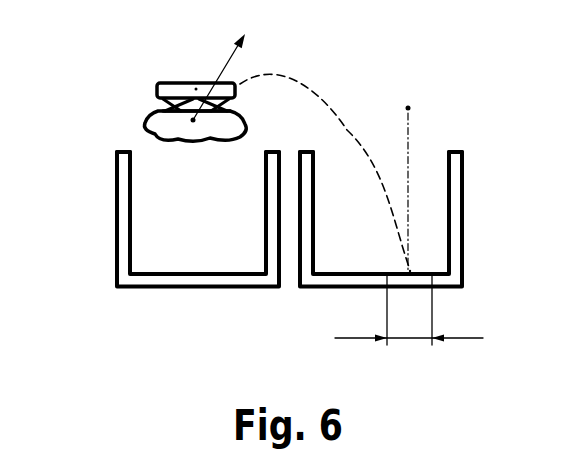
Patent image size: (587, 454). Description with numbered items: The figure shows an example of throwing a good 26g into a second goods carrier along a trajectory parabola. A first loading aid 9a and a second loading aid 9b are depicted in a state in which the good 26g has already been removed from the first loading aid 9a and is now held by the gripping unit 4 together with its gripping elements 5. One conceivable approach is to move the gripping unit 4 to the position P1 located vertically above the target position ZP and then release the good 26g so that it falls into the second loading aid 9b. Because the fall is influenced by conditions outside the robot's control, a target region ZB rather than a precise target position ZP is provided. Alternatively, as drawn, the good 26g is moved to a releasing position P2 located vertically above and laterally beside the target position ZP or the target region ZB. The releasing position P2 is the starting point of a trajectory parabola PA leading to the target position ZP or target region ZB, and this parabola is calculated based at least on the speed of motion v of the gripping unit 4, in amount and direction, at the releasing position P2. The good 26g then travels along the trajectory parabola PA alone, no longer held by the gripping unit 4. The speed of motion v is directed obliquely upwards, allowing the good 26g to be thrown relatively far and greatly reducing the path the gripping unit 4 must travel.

The gripping unit 4 is at (158, 90).
The gripper fingers 5 is at (175, 106).
The good 26g is at (168, 124).
The speed of motion v is at (226, 65).
The releasing position P2 is at (195, 88).
The trajectory parabola PA is at (285, 78).
The position P1 is at (407, 175).
The first loading aid 9a is at (121, 232).
The second loading aid 9b is at (453, 230).
The target position ZP is at (410, 270).
The target region ZB is at (409, 309).